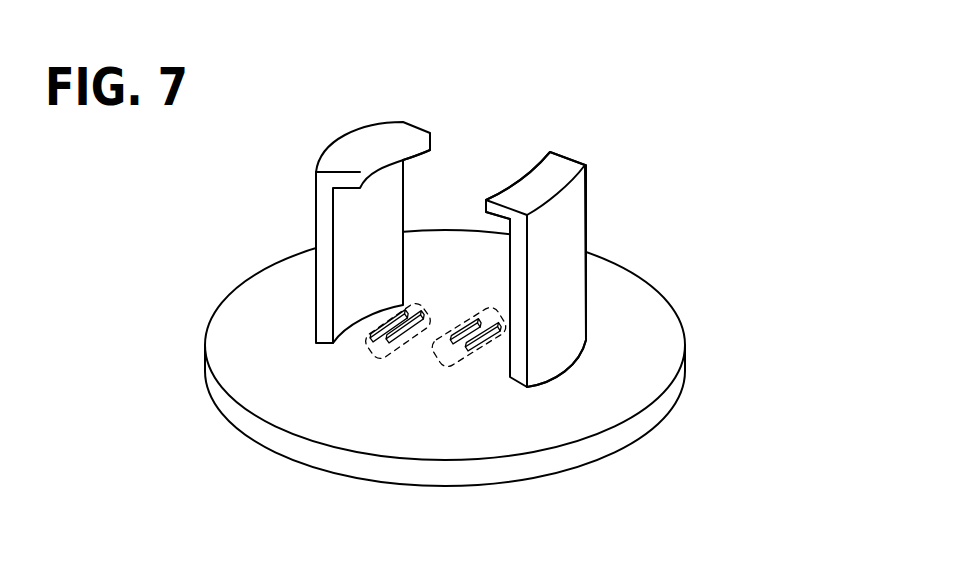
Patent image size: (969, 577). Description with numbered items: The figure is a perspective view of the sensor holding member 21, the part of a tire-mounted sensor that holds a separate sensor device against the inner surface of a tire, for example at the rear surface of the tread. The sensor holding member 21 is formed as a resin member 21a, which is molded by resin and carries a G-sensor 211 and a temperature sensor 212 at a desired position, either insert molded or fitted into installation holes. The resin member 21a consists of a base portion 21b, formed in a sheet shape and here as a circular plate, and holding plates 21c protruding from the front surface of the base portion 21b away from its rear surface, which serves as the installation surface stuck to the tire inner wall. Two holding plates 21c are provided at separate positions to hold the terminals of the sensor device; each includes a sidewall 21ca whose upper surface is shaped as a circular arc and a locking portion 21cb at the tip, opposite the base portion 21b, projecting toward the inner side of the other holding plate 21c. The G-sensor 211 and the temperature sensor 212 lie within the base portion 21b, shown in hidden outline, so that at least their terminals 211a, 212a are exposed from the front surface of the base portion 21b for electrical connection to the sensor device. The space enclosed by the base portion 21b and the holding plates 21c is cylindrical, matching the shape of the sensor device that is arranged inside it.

The sensor holding member 21 is at (518, 329).
The resin member 21a is at (585, 251).
The base portion 21b is at (677, 313).
The holding plate 21c is at (640, 251).
The sidewall 21ca is at (577, 207).
The locking portion 21cb is at (555, 167).
The G-sensor 211 is at (360, 340).
The terminal of G-sensor 211a is at (373, 343).
The temperature sensor 212 is at (443, 353).
The terminal of temperature sensor 212a is at (455, 350).